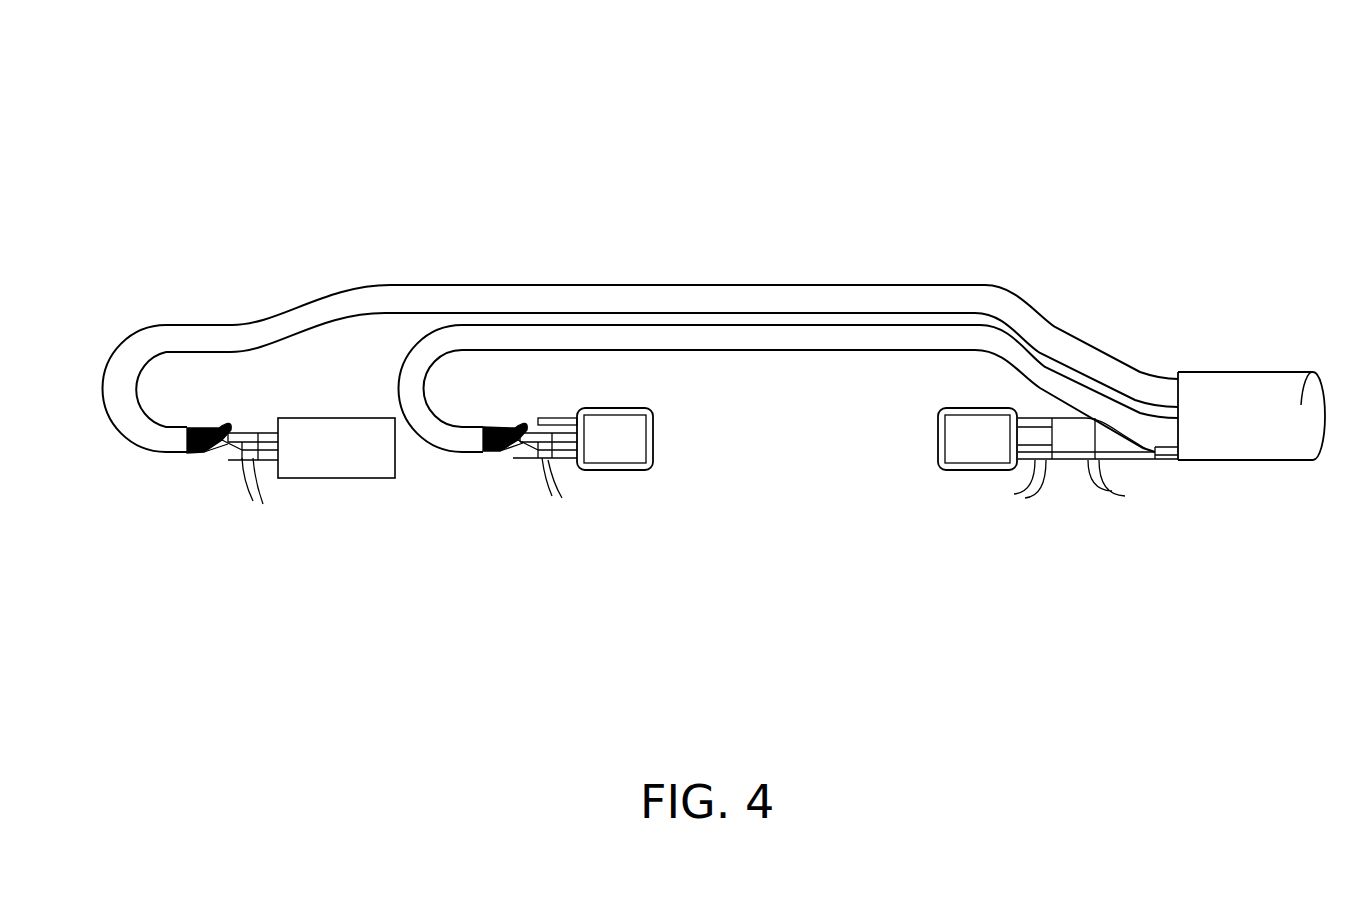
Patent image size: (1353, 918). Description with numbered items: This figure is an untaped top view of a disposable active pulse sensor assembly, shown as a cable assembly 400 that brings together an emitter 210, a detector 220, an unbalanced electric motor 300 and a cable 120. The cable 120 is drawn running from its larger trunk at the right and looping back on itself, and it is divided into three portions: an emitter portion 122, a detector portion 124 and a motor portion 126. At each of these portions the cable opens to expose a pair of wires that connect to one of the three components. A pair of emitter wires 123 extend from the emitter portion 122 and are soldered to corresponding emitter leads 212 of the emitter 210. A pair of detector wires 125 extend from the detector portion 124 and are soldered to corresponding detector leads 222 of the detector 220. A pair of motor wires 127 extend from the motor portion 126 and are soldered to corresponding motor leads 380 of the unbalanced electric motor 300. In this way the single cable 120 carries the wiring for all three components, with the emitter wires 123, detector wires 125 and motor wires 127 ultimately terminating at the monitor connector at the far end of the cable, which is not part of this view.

The cable assembly 400 is at (708, 100).
The cable 120 is at (1238, 372).
The emitter portion 122 is at (1155, 450).
The emitter wires 123 is at (1130, 483).
The detector portion 124 is at (465, 443).
The detector wires 125 is at (520, 458).
The motor portion 126 is at (150, 442).
The motor wires 127 is at (226, 450).
The emitter 210 is at (977, 407).
The emitter leads 212 is at (1005, 483).
The detector 220 is at (613, 408).
The detector leads 222 is at (573, 483).
The unbalanced electric motor 300 is at (300, 417).
The motor leads 380 is at (274, 487).